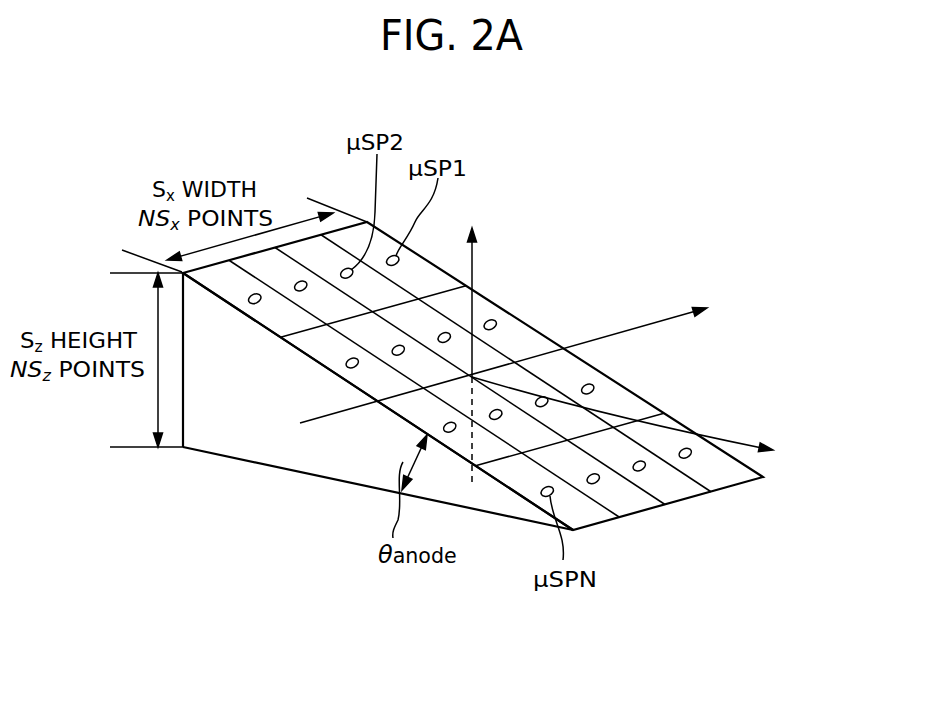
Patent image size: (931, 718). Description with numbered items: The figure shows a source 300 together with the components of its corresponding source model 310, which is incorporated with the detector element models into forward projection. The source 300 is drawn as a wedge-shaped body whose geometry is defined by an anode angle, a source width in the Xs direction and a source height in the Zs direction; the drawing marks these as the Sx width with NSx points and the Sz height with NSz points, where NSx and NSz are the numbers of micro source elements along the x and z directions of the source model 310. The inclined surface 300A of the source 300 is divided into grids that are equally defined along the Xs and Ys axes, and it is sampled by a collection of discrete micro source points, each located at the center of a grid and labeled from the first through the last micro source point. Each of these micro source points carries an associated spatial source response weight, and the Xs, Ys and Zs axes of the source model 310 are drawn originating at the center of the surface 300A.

The source 300 is at (233, 437).
The surface of the source 300A is at (525, 316).
The source model 310 is at (645, 144).